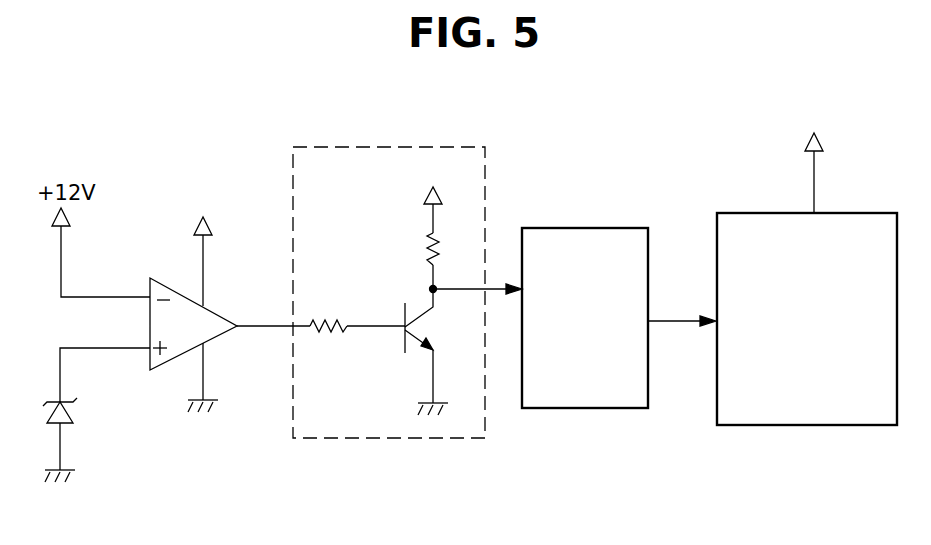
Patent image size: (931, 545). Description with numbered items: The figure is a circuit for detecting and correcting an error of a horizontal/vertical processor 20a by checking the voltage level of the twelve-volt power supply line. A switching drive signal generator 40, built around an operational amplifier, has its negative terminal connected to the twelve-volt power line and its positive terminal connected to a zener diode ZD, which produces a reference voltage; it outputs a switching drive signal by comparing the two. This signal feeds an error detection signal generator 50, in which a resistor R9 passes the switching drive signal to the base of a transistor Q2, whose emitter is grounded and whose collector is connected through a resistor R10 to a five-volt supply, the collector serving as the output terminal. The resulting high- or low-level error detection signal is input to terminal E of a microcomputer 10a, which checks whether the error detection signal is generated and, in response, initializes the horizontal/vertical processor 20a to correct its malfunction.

The switching drive signal generator 40 is at (218, 338).
The error detection signal generator 50 is at (389, 325).
The microcomputer 10a is at (582, 408).
The horizontal/vertical processor 20a is at (800, 425).
The zener diode ZD is at (78, 440).
The resistor R9 is at (328, 312).
The resistor R10 is at (419, 224).
The transistor Q2 is at (437, 352).